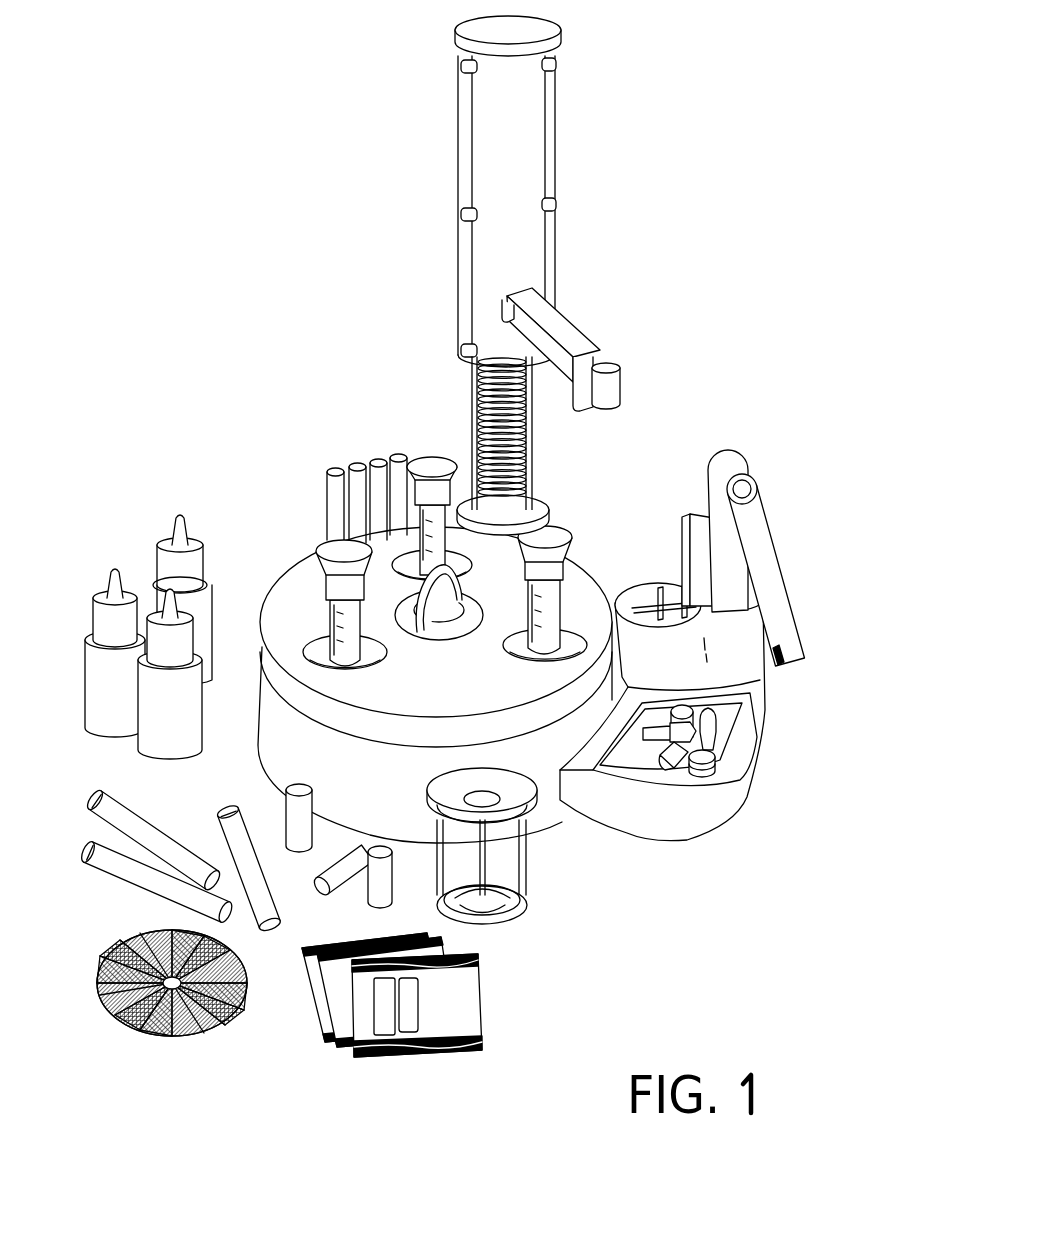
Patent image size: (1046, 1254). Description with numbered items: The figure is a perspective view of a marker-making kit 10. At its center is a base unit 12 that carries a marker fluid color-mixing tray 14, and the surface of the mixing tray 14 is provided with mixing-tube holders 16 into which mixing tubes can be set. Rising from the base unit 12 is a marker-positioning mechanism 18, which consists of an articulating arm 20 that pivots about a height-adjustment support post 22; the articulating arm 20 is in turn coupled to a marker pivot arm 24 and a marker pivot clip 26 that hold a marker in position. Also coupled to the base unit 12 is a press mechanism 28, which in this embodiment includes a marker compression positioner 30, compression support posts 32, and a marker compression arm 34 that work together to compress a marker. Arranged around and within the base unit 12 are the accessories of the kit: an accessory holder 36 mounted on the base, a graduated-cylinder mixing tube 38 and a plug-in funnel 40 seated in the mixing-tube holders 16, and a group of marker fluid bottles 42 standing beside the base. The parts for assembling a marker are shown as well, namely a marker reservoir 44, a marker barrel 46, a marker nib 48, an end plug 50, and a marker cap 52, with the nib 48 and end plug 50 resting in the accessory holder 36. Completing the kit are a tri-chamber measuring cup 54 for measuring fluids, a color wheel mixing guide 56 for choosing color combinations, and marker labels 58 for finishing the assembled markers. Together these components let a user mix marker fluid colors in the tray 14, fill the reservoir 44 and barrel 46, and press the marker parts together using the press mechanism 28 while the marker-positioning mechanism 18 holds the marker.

The marker-making kit 10 is at (152, 120).
The base unit 12 is at (264, 715).
The marker fluid color-mixing tray 14 is at (307, 576).
The mixing-tube holders 16 is at (372, 650).
The marker-positioning mechanism 18 is at (650, 27).
The articulating arm 20 is at (485, 128).
The height-adjustment support post 22 is at (484, 424).
The marker pivot arm 24 is at (558, 320).
The marker pivot clip 26 is at (614, 390).
The press mechanism 28 is at (823, 453).
The marker compression positioner 30 is at (653, 588).
The compression support posts 32 is at (710, 496).
The marker compression arm 34 is at (762, 546).
The accessory holder 36 is at (732, 727).
The graduated-cylinder mixing tube 38 is at (557, 598).
The plug-in funnel 40 is at (557, 525).
The marker fluid bottle 42 is at (93, 672).
The marker reservoir 44 is at (330, 482).
The marker barrel 46 is at (107, 875).
The marker nib 48 is at (660, 768).
The end plug 50 is at (720, 763).
The marker cap 52 is at (290, 822).
The tri-chamber measuring cup 54 is at (498, 922).
The color wheel mixing guide 56 is at (150, 1032).
The marker labels 58 is at (466, 1028).